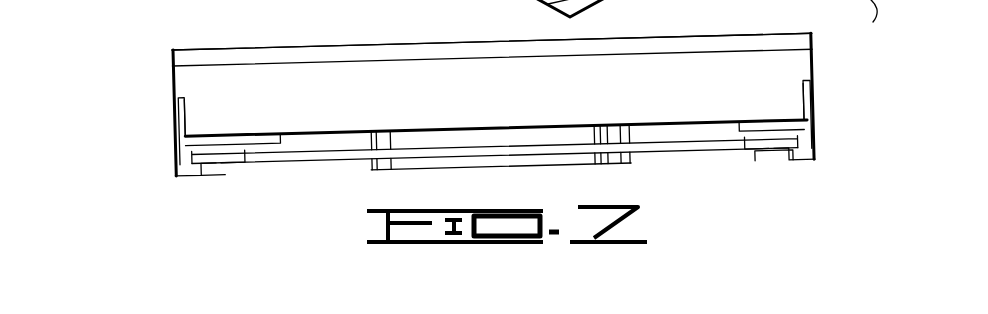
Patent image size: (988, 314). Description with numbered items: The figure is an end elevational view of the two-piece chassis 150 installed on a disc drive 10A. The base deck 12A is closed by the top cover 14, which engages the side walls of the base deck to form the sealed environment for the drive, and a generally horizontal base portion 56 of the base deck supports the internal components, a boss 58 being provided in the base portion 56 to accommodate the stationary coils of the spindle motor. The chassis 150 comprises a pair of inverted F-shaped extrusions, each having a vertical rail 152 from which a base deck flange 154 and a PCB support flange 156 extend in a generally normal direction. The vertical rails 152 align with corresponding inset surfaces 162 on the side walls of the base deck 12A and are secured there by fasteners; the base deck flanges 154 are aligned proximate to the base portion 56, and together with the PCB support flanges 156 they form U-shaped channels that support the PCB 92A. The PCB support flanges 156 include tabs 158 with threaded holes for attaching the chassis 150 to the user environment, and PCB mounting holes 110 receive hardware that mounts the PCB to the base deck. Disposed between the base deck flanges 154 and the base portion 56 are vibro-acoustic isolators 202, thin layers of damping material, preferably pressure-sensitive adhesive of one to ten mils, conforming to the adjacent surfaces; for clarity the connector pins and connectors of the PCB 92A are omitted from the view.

The disc drive 10A is at (168, 36).
The base deck 12A is at (185, 75).
The top cover 14 is at (345, 48).
The base portion 56 is at (348, 133).
The boss 58 is at (497, 163).
The PCB 92A is at (266, 158).
The PCB mounting holes 110 is at (535, 1).
The chassis 150 is at (169, 149).
The vertical rail 152 is at (173, 125).
The base deck flange 154 is at (243, 147).
The PCB support flange 156 is at (177, 178).
The tab 158 is at (227, 177).
The inset surface 162 is at (186, 123).
The vibro-acoustic isolator 202 is at (250, 133).